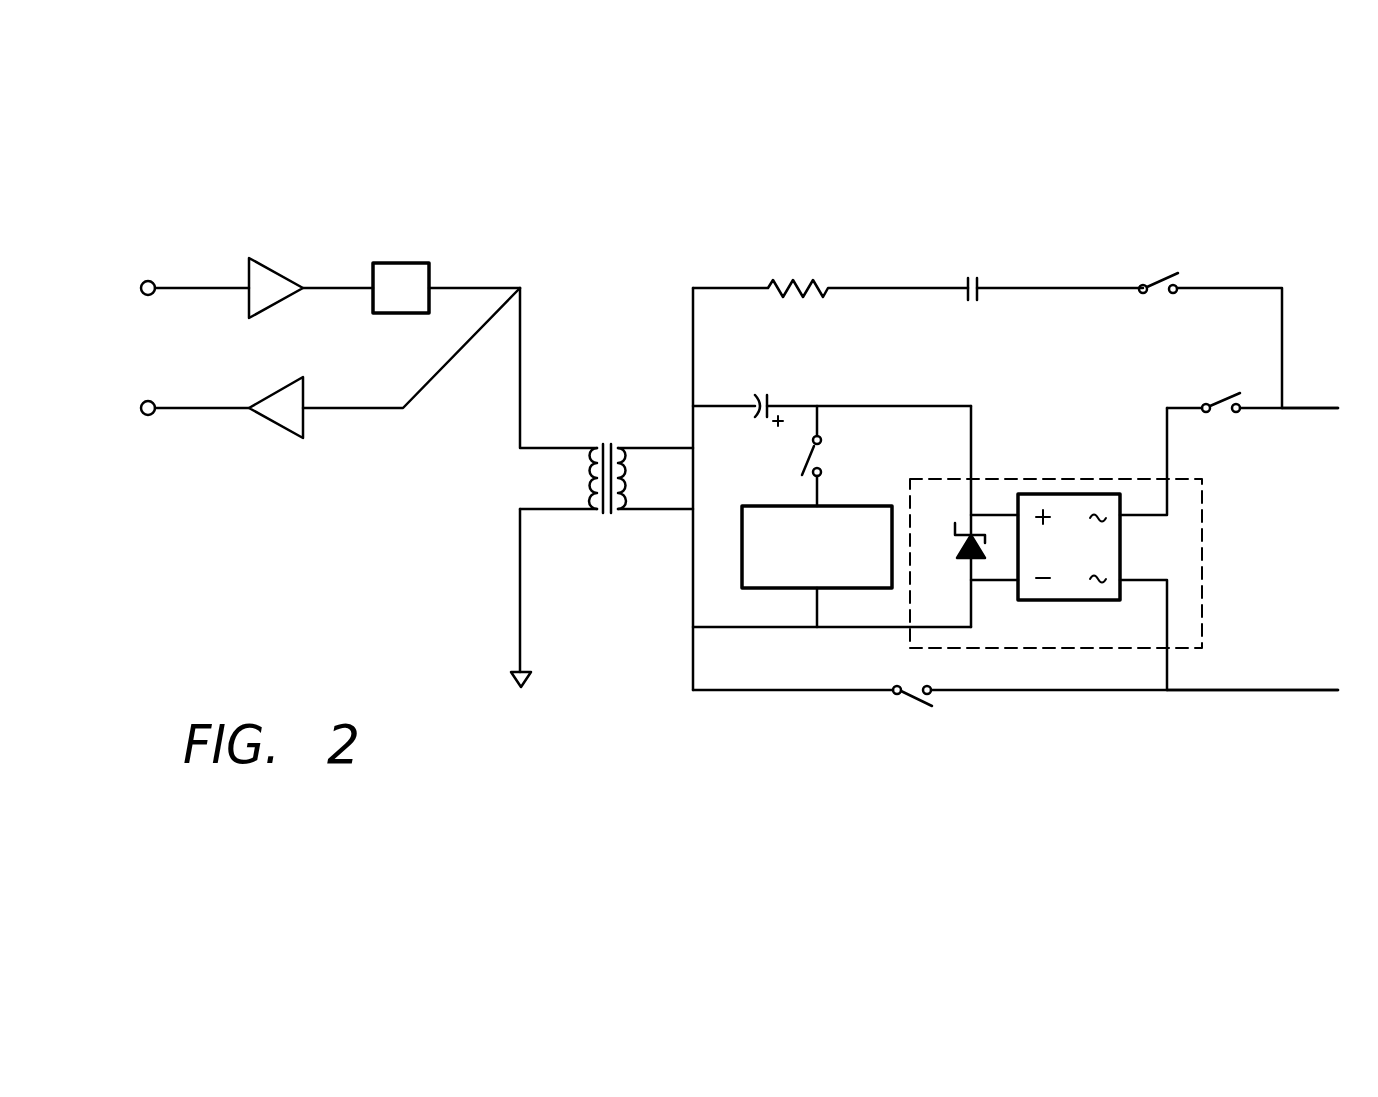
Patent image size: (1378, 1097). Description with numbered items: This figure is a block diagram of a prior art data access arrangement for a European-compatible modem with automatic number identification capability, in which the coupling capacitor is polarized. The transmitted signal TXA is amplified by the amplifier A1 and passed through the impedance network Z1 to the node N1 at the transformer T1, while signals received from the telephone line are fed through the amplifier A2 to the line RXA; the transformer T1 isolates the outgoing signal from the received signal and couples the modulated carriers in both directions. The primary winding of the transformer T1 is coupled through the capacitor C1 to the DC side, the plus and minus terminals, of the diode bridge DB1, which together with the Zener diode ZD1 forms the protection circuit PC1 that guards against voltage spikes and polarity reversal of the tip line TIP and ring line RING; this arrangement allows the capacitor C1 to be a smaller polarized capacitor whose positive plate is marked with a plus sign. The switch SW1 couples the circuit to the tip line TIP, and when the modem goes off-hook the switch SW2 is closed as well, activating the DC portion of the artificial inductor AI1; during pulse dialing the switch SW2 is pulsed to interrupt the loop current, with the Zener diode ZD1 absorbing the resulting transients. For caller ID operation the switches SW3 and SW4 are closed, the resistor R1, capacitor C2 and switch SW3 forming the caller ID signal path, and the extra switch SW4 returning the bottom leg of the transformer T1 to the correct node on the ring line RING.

The transmitted signal TXA is at (186, 271).
The received signal line RXA is at (184, 390).
The amplifier A1 is at (281, 270).
The amplifier A2 is at (273, 425).
The impedance network Z1 is at (446, 288).
The node N1 is at (522, 317).
The transformer T1 is at (641, 478).
The resistor R1 is at (830, 267).
The capacitor C1 is at (832, 390).
The capacitor C2 is at (1053, 269).
The switch SW1 is at (1252, 385).
The switch SW2 is at (835, 456).
The switch SW3 is at (1210, 323).
The switch SW4 is at (1015, 712).
The artificial inductor AI1 is at (742, 552).
The Zener diode ZD1 is at (972, 552).
The diode bridge DB1 is at (1075, 492).
The protection circuit PC1 is at (1203, 585).
The tip line TIP is at (1315, 426).
The ring line RING is at (1266, 709).